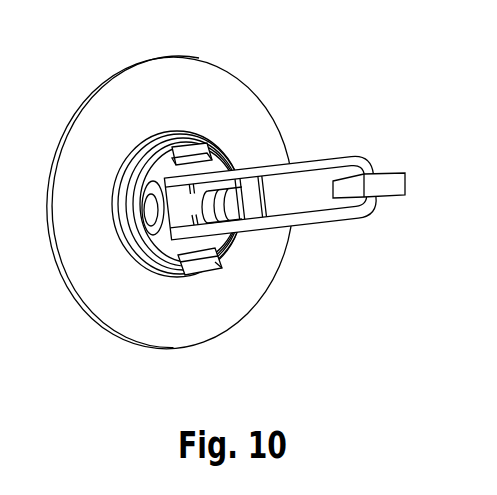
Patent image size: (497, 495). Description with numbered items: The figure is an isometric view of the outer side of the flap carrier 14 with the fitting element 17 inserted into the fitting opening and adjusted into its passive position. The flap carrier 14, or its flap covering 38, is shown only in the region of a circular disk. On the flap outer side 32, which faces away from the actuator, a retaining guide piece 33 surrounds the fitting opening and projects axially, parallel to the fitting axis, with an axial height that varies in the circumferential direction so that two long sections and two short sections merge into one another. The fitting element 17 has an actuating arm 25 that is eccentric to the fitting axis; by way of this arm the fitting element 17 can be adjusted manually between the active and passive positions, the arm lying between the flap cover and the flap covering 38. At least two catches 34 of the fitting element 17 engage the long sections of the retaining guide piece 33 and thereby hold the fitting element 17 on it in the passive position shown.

The flap carrier 14 is at (266, 113).
The fitting element 17 is at (360, 149).
The actuating arm 25 is at (353, 221).
The flap outer side 32 is at (111, 130).
The retaining guide piece 33 is at (215, 121).
The catches 34 is at (214, 276).
The flap covering 38 is at (276, 139).